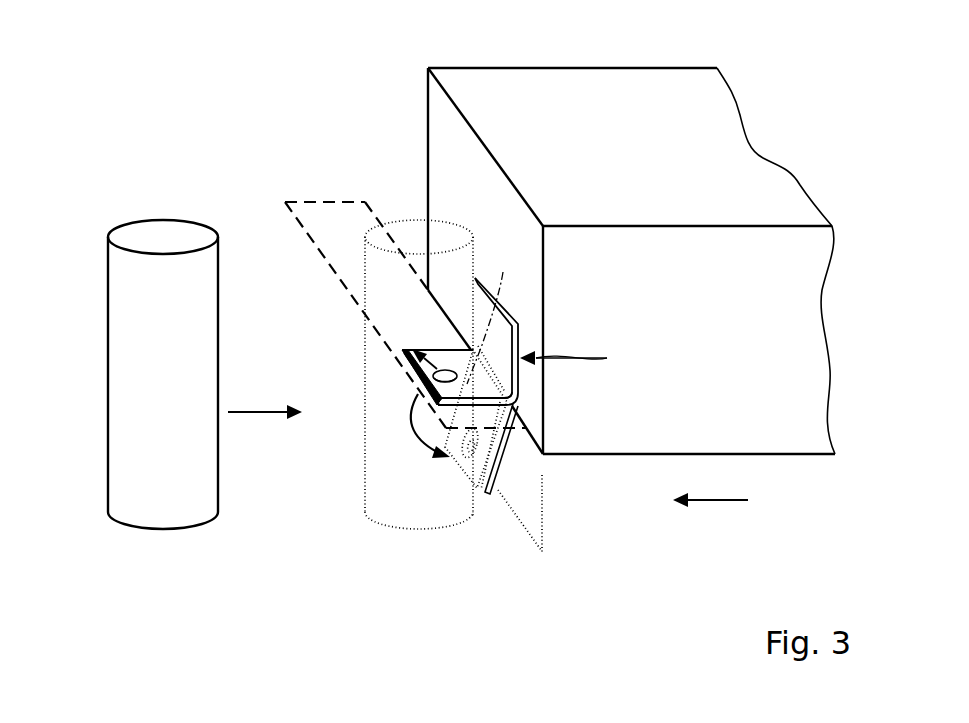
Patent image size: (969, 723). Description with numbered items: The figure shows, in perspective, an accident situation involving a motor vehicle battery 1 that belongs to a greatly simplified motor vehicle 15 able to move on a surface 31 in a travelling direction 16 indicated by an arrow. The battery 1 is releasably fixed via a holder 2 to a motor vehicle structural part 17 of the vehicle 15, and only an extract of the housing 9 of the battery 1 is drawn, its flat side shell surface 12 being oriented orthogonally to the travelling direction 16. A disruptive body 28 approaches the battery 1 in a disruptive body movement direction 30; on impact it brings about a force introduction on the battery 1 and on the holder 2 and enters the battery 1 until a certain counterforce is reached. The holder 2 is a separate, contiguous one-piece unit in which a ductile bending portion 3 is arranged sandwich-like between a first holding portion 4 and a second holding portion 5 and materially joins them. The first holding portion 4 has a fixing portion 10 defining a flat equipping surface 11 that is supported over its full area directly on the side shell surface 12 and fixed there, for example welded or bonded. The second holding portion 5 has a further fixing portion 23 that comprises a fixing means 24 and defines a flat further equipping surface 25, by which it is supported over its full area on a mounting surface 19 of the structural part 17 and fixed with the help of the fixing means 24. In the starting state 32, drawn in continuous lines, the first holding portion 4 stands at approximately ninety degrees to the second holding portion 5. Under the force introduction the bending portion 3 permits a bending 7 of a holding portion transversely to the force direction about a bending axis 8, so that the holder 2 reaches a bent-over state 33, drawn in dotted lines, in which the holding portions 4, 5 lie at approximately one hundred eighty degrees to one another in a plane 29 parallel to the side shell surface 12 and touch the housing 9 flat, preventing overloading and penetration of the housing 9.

The motor vehicle battery 1 is at (303, 64).
The holder 2 is at (554, 417).
The bending portion 3 is at (515, 399).
The first holding portion 4 is at (544, 325).
The second holding portion 5 is at (448, 342).
The bending 7 is at (408, 438).
The bending axis 8 is at (488, 314).
The housing 9 is at (618, 229).
The fixing portion 10 is at (585, 316).
The equipping surface 11 is at (519, 333).
The side shell surface 12 is at (441, 116).
The motor vehicle 15 is at (405, 267).
The travelling direction 16 is at (718, 504).
The motor vehicle structural part 17 is at (319, 200).
The mounting surface 19 is at (400, 358).
The further fixing portion 23 is at (410, 350).
The fixing means 24 is at (446, 370).
The further equipping surface 25 is at (413, 378).
The disruptive body 28 is at (166, 232).
The plane 29 is at (512, 530).
The disruptive body movement direction 30 is at (257, 416).
The surface 31 is at (435, 653).
The starting state 32 is at (592, 354).
The bent-over state 33 is at (503, 453).